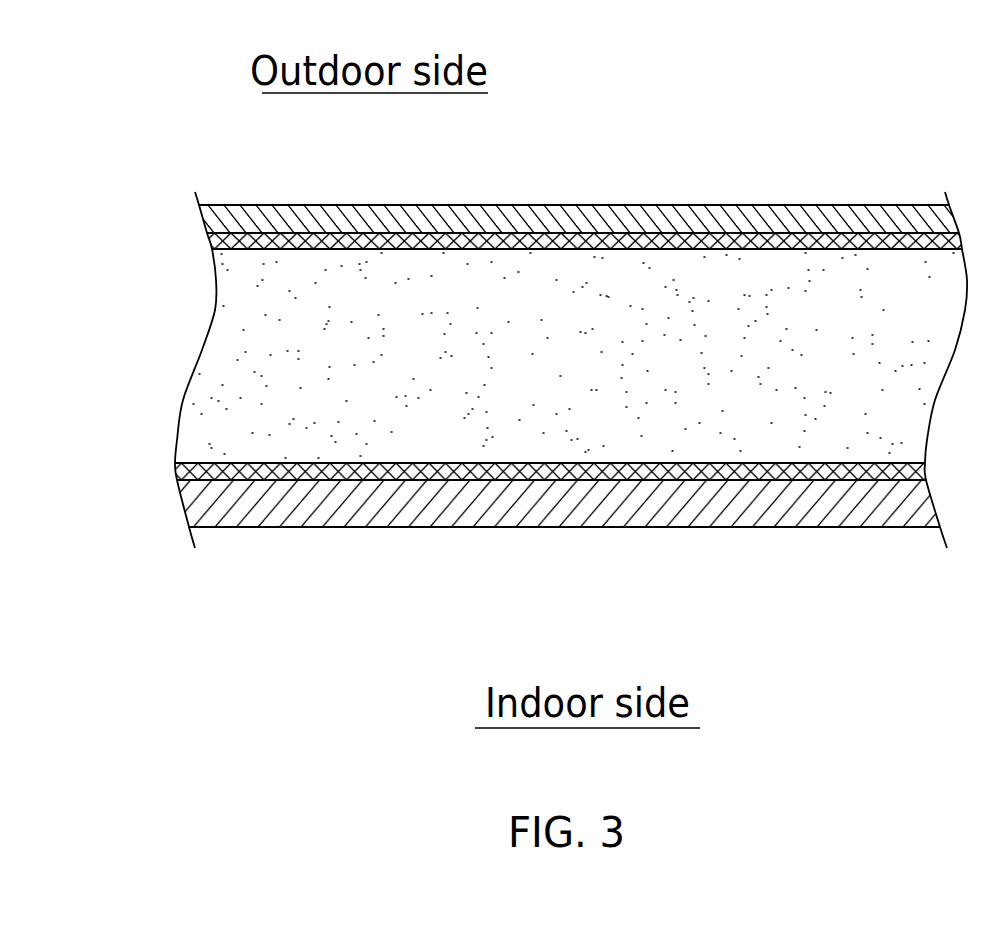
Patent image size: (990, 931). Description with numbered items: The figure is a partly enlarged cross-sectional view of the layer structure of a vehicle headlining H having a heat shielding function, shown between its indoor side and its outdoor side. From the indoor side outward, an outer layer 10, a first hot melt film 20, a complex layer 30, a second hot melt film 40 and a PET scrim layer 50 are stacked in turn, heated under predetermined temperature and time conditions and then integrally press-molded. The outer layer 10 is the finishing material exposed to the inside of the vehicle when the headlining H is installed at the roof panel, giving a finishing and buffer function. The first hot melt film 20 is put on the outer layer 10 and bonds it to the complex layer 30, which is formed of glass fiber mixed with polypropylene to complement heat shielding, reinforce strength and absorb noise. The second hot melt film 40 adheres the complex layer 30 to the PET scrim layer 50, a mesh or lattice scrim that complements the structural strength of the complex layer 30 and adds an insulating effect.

The headlining H is at (835, 177).
The outer layer 10 is at (393, 508).
The first hot melt film 20 is at (537, 478).
The complex layer 30 is at (655, 440).
The second hot melt film 40 is at (621, 237).
The PET scrim layer 50 is at (503, 218).